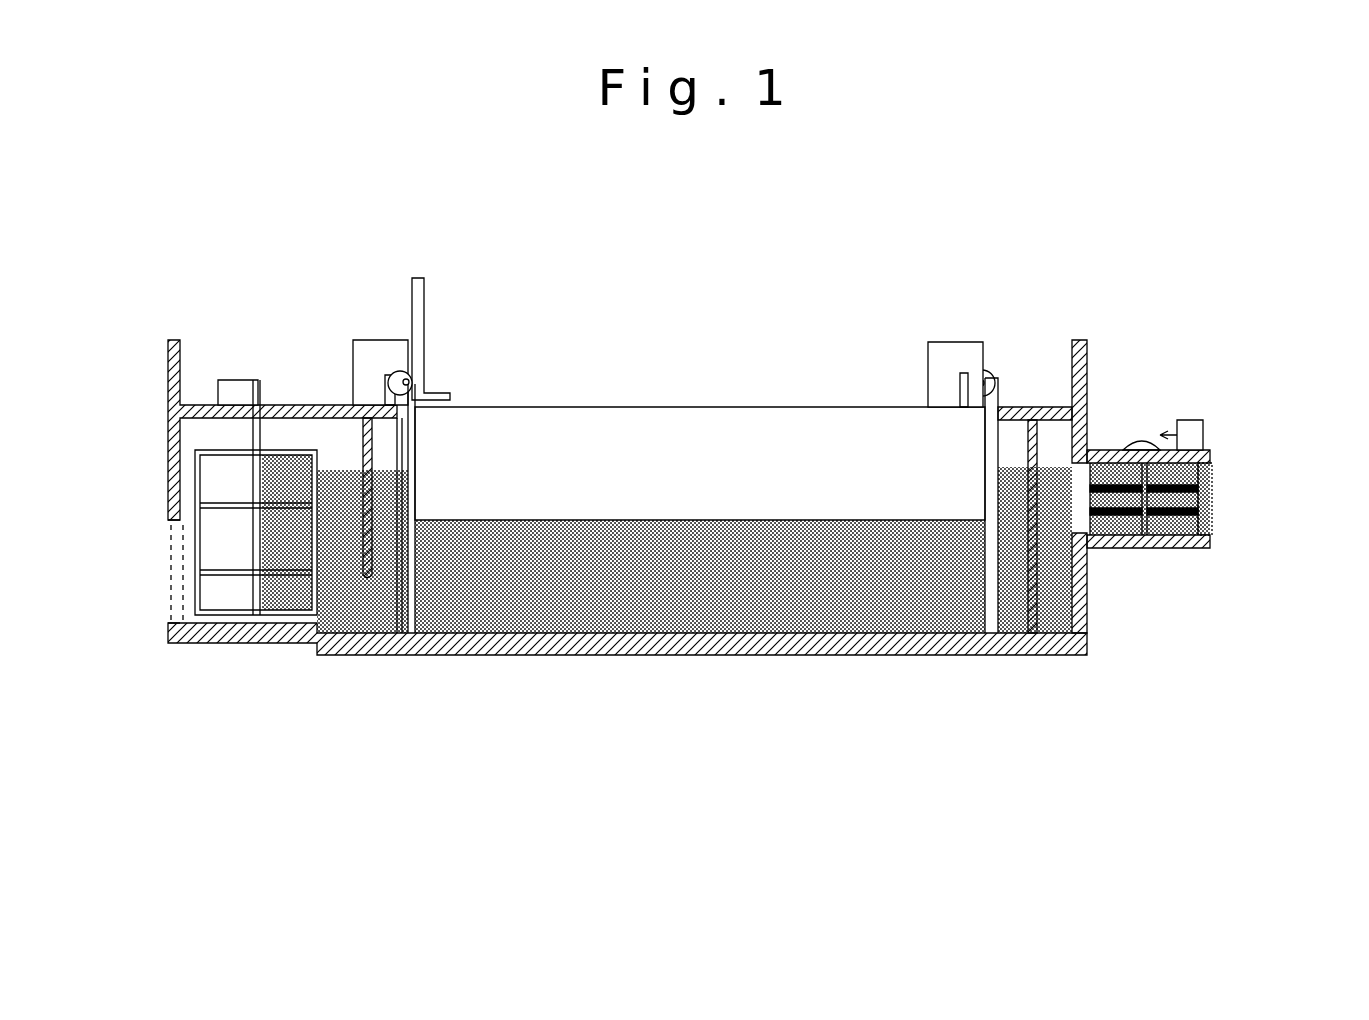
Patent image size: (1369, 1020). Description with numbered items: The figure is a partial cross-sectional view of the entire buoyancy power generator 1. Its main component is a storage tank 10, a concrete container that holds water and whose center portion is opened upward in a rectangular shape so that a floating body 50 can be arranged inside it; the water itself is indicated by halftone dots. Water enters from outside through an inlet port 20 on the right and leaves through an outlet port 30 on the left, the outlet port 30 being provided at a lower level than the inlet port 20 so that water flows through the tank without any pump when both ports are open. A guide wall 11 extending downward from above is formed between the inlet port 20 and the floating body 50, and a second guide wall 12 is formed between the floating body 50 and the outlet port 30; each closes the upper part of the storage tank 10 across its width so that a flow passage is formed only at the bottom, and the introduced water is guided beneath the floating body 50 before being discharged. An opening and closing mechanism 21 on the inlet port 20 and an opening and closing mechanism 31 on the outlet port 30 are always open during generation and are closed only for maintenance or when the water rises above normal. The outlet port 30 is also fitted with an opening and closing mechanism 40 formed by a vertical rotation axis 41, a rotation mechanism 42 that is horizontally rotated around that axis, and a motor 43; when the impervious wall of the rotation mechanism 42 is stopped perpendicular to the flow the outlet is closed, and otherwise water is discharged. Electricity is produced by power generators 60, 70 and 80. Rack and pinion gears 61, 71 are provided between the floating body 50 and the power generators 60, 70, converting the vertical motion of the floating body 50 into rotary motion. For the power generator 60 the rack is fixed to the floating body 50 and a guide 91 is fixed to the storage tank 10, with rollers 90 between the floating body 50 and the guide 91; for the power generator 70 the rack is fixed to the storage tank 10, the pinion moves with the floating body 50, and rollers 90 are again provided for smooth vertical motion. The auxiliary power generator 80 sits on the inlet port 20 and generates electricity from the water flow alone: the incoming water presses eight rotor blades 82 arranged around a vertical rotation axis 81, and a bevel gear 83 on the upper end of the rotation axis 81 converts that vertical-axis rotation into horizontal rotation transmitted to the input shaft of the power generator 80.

The buoyancy power generator 1 is at (108, 174).
The storage tank 10 is at (647, 634).
The guide wall 11 is at (1011, 634).
The guide wall 12 is at (355, 634).
The inlet port 20 is at (1222, 508).
The opening and closing mechanism 21 is at (1213, 490).
The outlet port 30 is at (152, 547).
The opening and closing mechanism 31 is at (168, 582).
The opening and closing mechanism 40 is at (183, 247).
The rotation axis 41 is at (262, 450).
The rotation mechanism 42 is at (278, 455).
The motor 43 is at (233, 392).
The floating body 50 is at (700, 440).
The power generator 60 is at (380, 340).
The rack and pinion gear 61 is at (420, 380).
The power generator 70 is at (950, 355).
The rack and pinion gear 71 is at (990, 385).
The power generator 80 is at (1190, 442).
The rotation axis 81 is at (1130, 526).
The rotor blade 82 is at (1175, 530).
The bevel gear 83 is at (1140, 440).
The roller 90 is at (415, 462).
The guide 91 is at (410, 567).